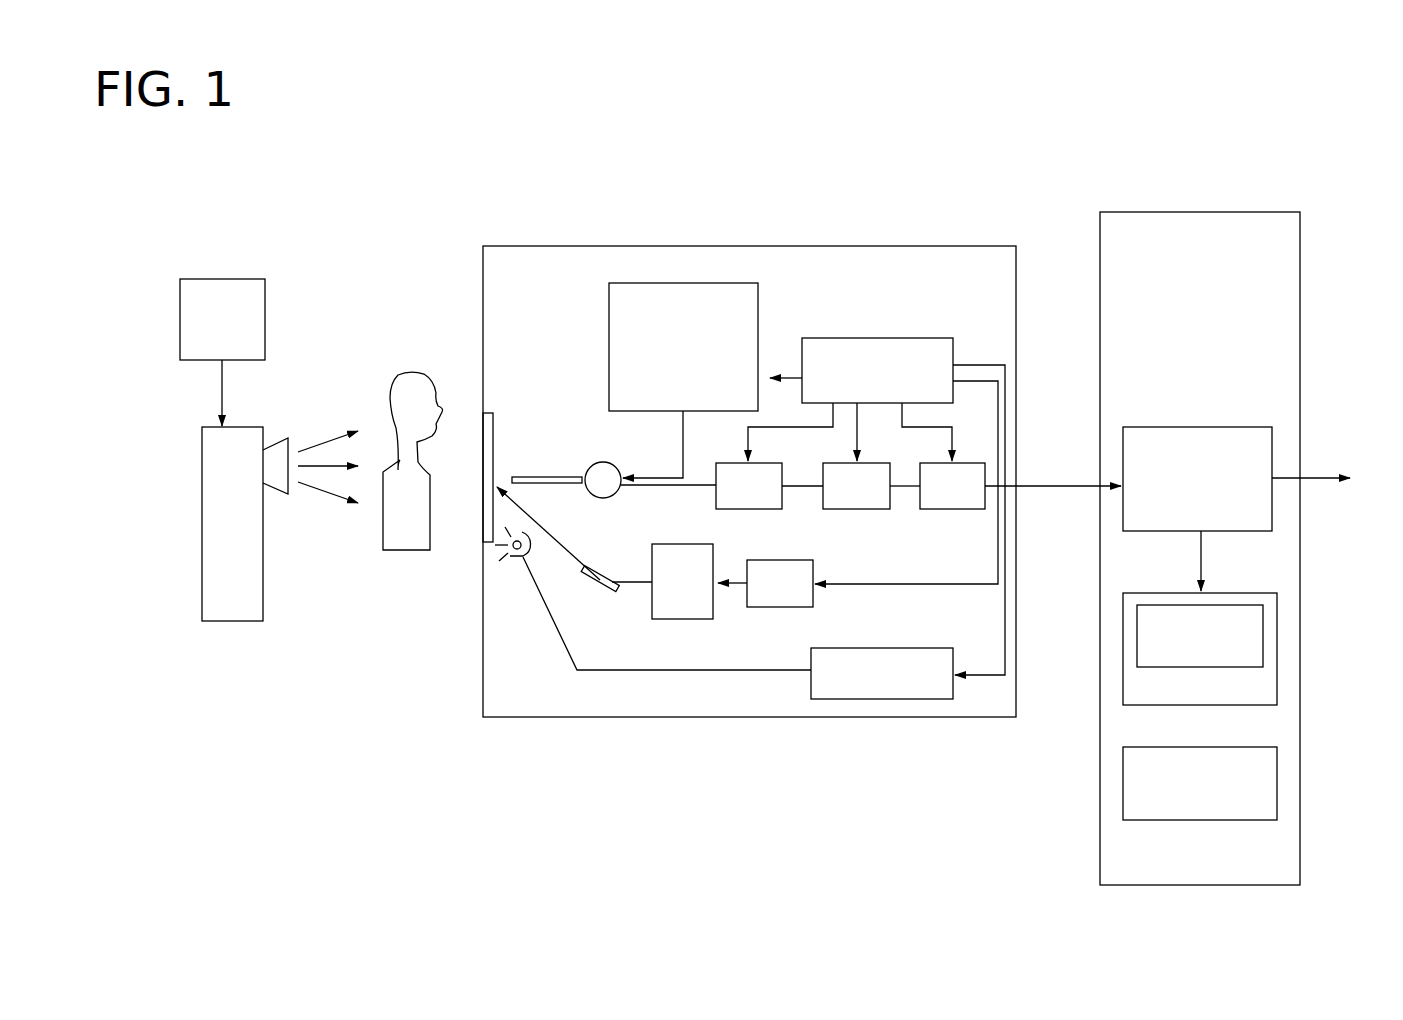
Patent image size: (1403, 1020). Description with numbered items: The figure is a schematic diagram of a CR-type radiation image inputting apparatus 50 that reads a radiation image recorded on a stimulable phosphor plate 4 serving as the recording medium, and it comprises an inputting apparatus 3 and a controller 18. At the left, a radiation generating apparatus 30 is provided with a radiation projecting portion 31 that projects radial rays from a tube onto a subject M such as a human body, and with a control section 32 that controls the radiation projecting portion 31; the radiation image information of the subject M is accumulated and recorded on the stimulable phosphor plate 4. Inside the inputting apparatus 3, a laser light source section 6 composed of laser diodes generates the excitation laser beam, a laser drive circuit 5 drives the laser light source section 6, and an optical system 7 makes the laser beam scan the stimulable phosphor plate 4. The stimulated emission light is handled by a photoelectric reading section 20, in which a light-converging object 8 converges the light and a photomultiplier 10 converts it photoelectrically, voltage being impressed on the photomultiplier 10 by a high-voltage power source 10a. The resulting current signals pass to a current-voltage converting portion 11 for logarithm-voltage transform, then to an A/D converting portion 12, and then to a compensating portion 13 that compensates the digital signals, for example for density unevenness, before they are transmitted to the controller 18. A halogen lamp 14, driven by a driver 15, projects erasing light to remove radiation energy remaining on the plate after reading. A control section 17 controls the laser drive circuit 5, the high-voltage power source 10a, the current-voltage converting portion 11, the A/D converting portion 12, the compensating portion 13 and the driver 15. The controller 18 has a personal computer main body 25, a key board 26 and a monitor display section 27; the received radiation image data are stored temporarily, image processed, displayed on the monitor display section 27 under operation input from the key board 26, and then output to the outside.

The inputting apparatus 3 is at (867, 244).
The stimulable phosphor plate 4 is at (490, 417).
The laser drive circuit 5 is at (760, 608).
The laser light source section 6 is at (677, 620).
The optical system 7 is at (591, 590).
The light-converging object 8 is at (548, 476).
The photomultiplier 10 is at (607, 498).
The high-voltage power source 10a is at (758, 290).
The current-voltage converting portion 11 is at (718, 462).
The A/D converting portion 12 is at (855, 510).
The compensating portion 13 is at (950, 510).
The halogen lamp 14 is at (519, 558).
The driver 15 is at (911, 647).
The control section 17 is at (908, 337).
The controller 18 is at (1200, 211).
The photoelectric reading section 20 is at (605, 463).
The personal computer main body 25 is at (1272, 438).
The key board 26 is at (1277, 785).
The monitor display section 27 is at (1277, 648).
The radiation generating apparatus 30 is at (233, 425).
The radiation projecting portion 31 is at (202, 460).
The control section 32 is at (223, 278).
The radiation image inputting apparatus 50 is at (1058, 196).
The subject M is at (412, 372).